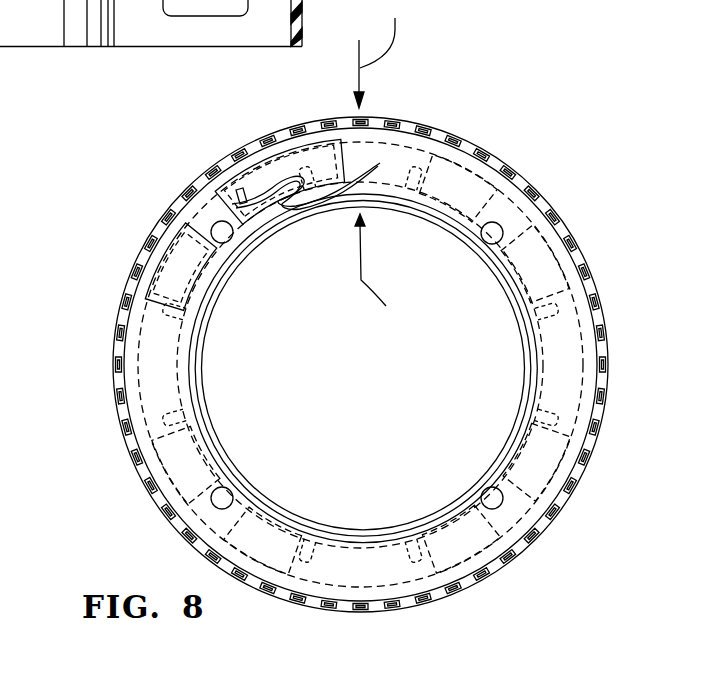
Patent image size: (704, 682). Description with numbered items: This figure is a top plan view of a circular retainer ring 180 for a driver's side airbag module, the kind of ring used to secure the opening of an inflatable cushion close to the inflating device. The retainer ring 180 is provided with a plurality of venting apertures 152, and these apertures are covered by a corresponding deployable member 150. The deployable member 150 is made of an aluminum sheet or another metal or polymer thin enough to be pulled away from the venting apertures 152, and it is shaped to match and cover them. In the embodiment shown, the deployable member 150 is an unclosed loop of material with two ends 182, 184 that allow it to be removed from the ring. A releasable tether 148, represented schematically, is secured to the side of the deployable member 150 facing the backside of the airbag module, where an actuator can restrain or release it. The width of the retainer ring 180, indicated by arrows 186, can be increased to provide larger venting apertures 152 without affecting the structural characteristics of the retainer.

The releasable tether 148 is at (350, 172).
The deployable member 150 is at (320, 364).
The venting apertures 152 is at (364, 327).
The retainer ring 180 is at (362, 364).
The end 182 is at (226, 181).
The end 184 is at (190, 226).
The arrows 186 is at (383, 165).